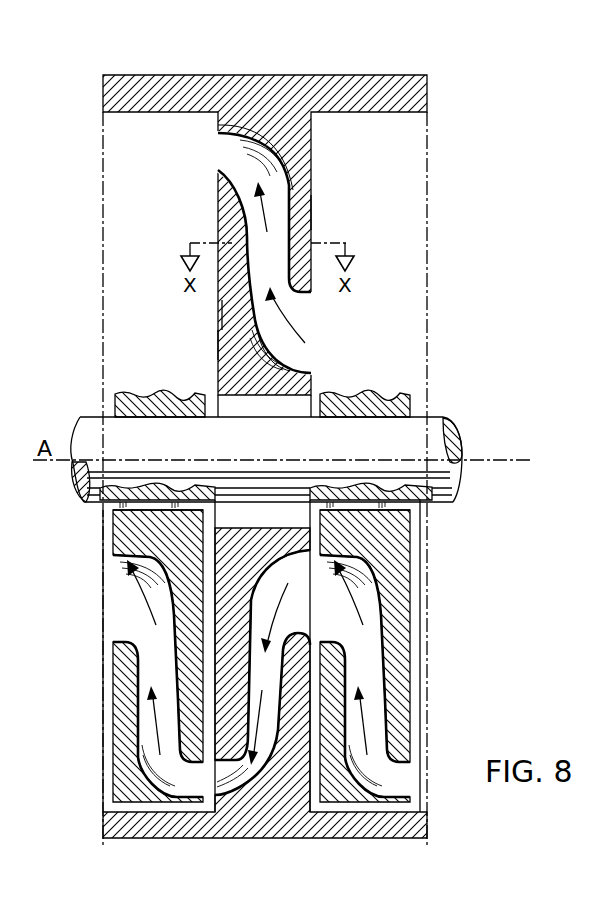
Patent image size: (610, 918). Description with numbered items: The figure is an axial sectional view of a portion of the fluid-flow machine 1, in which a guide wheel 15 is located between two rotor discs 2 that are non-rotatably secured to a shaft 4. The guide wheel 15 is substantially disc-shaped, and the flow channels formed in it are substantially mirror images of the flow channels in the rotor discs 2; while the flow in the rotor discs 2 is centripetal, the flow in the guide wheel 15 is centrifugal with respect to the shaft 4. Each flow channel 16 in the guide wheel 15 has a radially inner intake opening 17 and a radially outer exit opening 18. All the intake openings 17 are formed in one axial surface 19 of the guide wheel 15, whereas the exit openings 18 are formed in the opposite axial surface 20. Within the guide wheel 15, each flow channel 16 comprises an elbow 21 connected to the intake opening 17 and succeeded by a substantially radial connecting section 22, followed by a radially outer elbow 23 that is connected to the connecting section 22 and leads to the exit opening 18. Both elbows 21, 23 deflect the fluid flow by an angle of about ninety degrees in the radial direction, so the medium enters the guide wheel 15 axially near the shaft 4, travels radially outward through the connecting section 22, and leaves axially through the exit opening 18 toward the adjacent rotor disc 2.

The fluid-flow machine 1 is at (437, 91).
The rotor disc 2 is at (152, 534).
The shaft 4 is at (428, 470).
The guide wheel 15 is at (233, 312).
The flow channel 16 is at (312, 212).
The intake opening 17 is at (310, 355).
The exit opening 18 is at (217, 152).
The axial surface 19 is at (312, 157).
The opposite axial surface 20 is at (217, 344).
The elbow 21 is at (258, 366).
The connecting section 22 is at (235, 268).
The radially outer elbow 23 is at (312, 130).